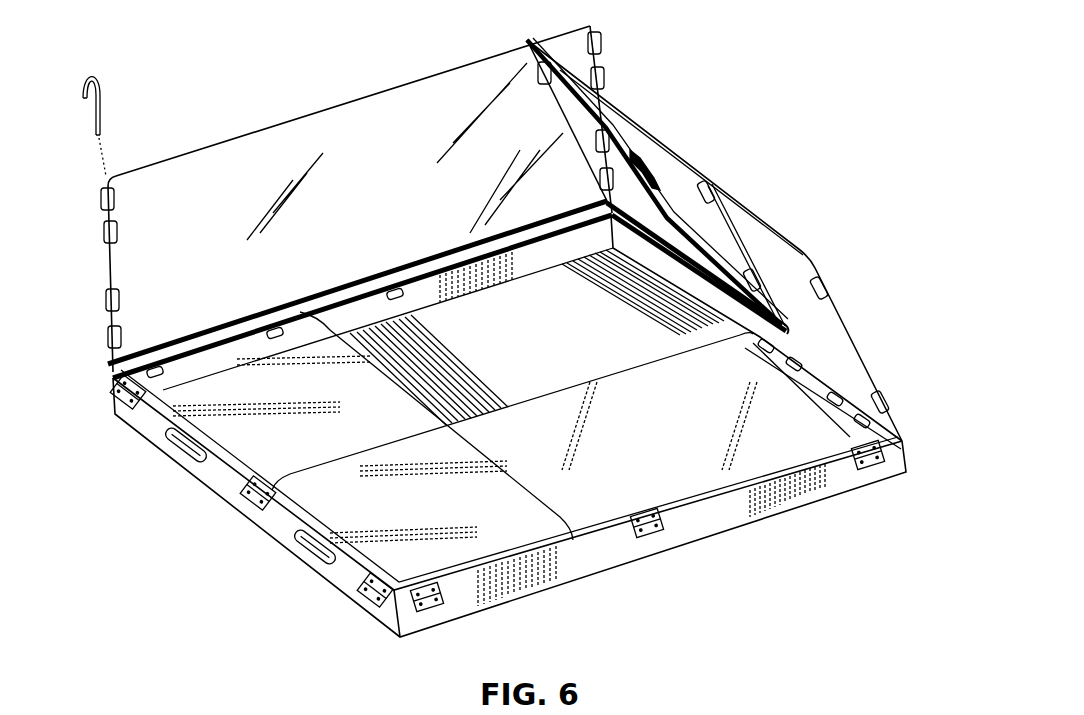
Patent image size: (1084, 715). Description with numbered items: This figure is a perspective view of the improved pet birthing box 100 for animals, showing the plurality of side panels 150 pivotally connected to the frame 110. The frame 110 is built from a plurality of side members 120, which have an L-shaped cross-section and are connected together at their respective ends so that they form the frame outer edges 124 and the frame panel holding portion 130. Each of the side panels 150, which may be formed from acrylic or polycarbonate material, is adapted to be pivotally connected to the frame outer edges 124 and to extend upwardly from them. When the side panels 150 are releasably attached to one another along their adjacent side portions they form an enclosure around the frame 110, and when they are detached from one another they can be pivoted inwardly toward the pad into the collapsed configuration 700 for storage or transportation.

The improved pet birthing box 100 is at (662, 72).
The frame 110 is at (903, 432).
The side members 120 is at (218, 478).
The frame outer edges 124 is at (128, 380).
The frame panel holding portion 130 is at (558, 345).
The side panels 150 is at (197, 173).
The collapsed configuration 700 is at (713, 714).